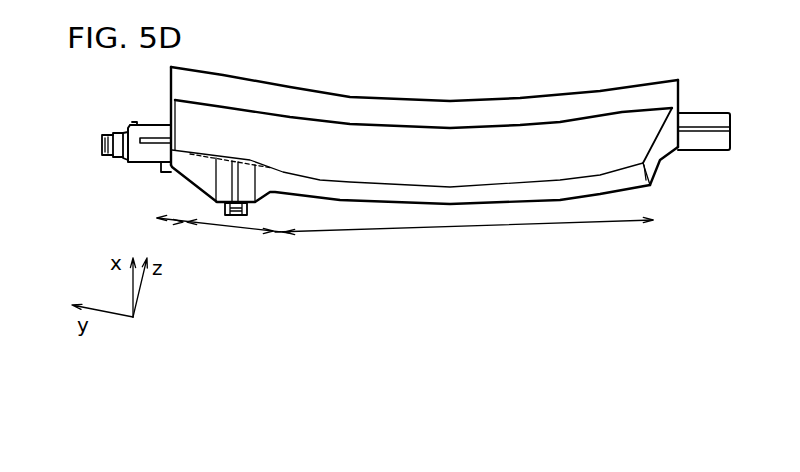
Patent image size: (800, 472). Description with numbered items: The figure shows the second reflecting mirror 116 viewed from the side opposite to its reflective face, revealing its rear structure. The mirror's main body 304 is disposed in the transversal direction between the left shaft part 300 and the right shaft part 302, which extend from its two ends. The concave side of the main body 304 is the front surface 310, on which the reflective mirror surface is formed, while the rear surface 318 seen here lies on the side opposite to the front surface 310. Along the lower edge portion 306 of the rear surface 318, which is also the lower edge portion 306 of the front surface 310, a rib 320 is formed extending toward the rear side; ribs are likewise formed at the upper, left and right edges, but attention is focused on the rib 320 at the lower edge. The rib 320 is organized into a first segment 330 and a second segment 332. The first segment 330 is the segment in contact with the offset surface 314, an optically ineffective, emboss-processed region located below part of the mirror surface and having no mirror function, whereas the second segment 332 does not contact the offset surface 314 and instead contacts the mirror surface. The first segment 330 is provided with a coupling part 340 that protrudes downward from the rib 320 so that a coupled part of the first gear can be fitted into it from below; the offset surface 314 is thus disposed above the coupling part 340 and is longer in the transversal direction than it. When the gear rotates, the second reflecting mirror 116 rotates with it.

The second reflecting mirror 116 is at (768, 307).
The left shaft part 300 is at (708, 116).
The right shaft part 302 is at (148, 130).
The main body 304 is at (619, 80).
The lower edge portion 306 is at (632, 172).
The front surface 310 is at (445, 100).
The offset surface 314 is at (268, 163).
The rear surface 318 is at (498, 168).
The rib 320 is at (574, 186).
The first segment 330 is at (235, 215).
The second segment 332 is at (167, 216).
The coupling part 340 is at (238, 215).